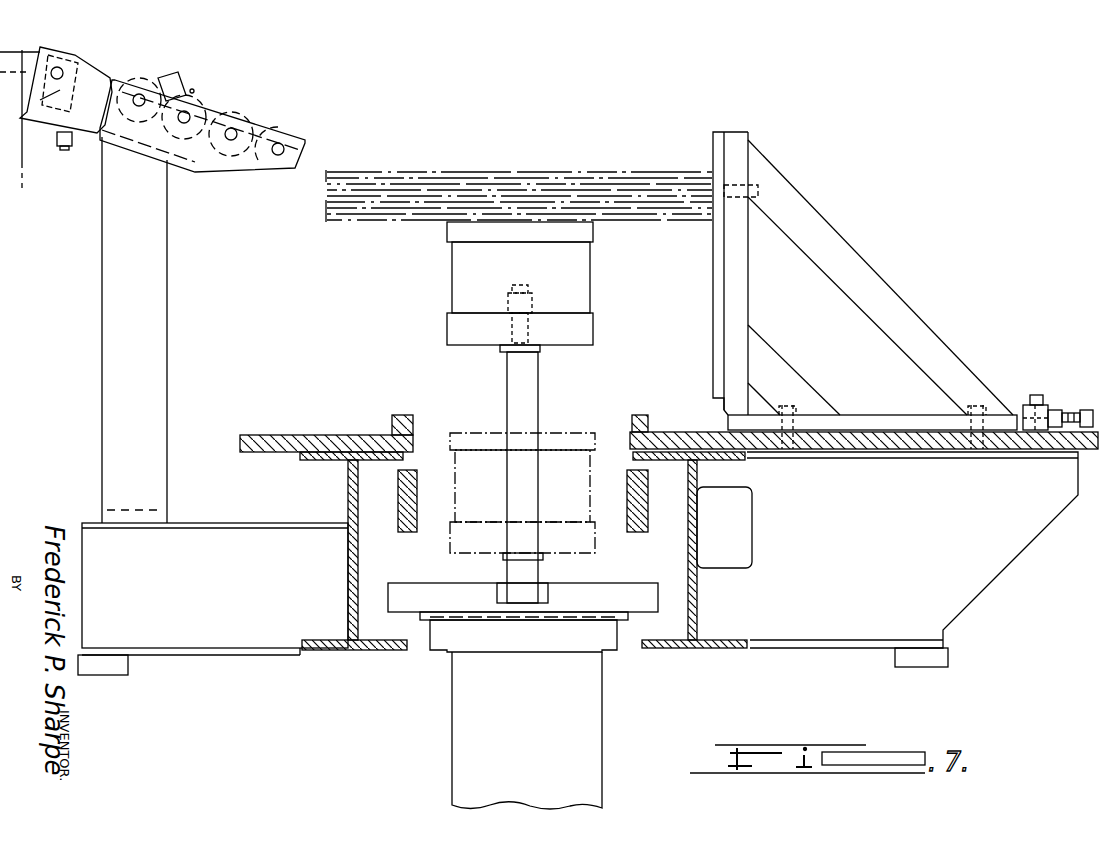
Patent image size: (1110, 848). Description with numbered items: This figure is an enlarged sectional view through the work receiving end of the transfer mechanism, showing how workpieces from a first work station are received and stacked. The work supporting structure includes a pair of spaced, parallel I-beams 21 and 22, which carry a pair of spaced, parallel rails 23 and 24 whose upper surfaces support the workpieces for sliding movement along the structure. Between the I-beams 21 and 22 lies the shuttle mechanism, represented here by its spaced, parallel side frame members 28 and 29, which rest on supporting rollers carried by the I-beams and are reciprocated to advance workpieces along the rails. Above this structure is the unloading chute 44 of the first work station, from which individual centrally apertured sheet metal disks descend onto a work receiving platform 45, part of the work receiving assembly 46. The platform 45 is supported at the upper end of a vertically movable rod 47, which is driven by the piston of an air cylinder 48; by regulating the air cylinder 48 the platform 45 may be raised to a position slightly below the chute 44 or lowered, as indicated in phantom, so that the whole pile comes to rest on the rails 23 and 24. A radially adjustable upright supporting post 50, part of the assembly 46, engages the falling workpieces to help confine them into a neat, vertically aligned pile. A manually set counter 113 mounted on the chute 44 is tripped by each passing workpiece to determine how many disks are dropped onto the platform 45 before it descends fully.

The counter 113 is at (172, 80).
The unloading chute 44 is at (262, 128).
The I-beam 21 is at (345, 581).
The I-beam 22 is at (700, 596).
The rail 23 is at (392, 424).
The rail 24 is at (648, 420).
The side frame member 28 is at (405, 534).
The side frame member 29 is at (636, 534).
The work receiving platform 45 is at (572, 280).
The work receiving assembly 46 is at (772, 148).
The vertically movable rod 47 is at (537, 394).
The air cylinder 48 is at (535, 719).
The upright supporting post 50 is at (722, 132).